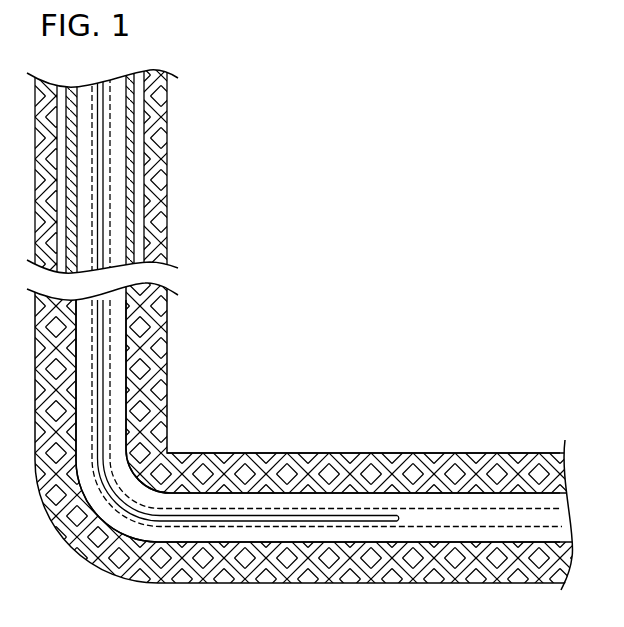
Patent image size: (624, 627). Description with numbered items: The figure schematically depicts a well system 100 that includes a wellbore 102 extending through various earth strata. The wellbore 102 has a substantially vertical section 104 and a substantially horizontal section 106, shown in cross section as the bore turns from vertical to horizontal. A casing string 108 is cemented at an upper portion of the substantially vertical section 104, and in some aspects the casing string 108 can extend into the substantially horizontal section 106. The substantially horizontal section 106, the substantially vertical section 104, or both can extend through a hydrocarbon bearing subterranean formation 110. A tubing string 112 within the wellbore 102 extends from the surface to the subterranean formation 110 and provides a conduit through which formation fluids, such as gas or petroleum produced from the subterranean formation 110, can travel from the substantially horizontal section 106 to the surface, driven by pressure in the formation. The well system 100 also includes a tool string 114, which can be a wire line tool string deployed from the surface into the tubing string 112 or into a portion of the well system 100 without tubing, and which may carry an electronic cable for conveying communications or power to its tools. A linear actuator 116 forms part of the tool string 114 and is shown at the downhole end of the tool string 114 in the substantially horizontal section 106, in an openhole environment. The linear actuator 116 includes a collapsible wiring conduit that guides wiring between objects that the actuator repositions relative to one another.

The well system 100 is at (368, 340).
The wellbore 102 is at (126, 380).
The substantially vertical section 104 is at (133, 333).
The substantially horizontal section 106 is at (444, 472).
The casing string 108 is at (132, 172).
The subterranean formation 110 is at (222, 453).
The tubing string 112 is at (110, 413).
The tool string 114 is at (108, 127).
The linear actuator 116 is at (352, 514).